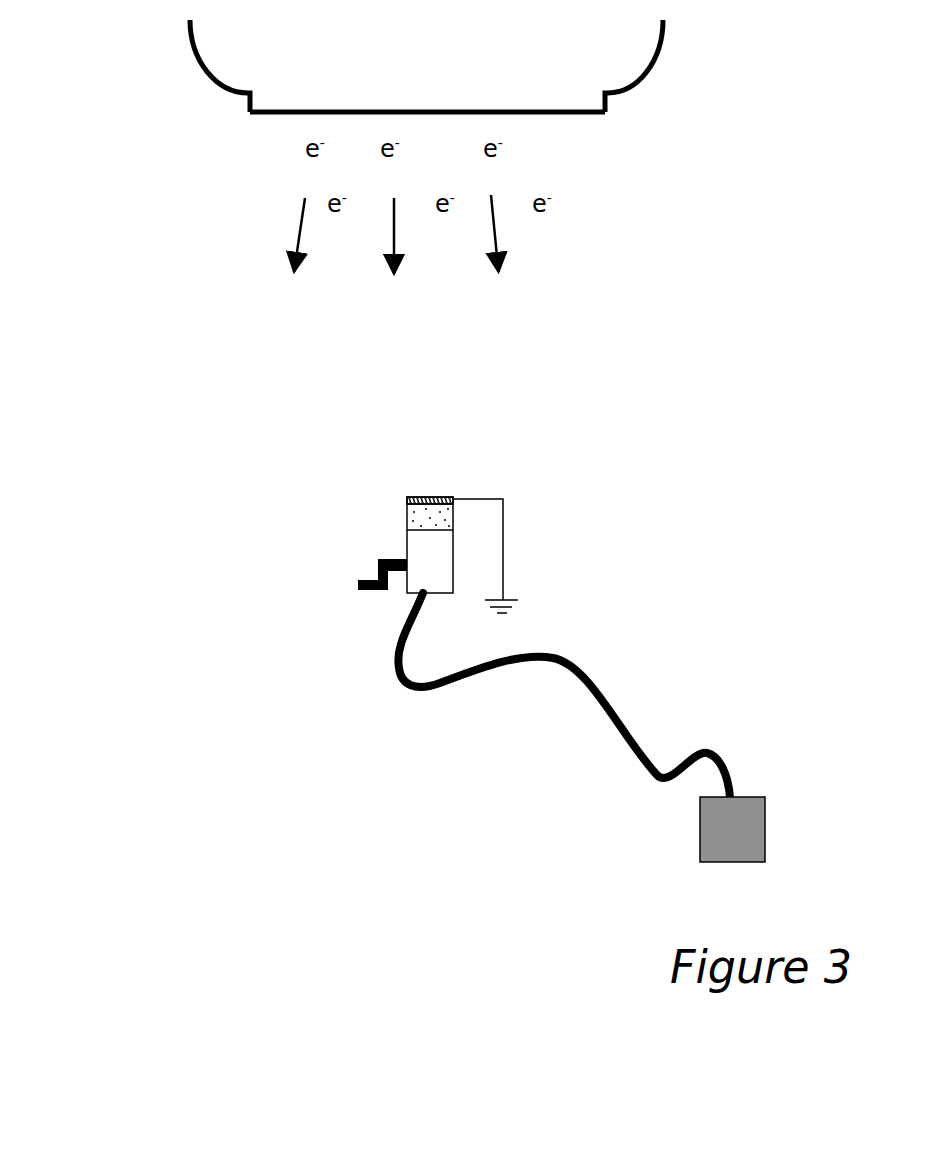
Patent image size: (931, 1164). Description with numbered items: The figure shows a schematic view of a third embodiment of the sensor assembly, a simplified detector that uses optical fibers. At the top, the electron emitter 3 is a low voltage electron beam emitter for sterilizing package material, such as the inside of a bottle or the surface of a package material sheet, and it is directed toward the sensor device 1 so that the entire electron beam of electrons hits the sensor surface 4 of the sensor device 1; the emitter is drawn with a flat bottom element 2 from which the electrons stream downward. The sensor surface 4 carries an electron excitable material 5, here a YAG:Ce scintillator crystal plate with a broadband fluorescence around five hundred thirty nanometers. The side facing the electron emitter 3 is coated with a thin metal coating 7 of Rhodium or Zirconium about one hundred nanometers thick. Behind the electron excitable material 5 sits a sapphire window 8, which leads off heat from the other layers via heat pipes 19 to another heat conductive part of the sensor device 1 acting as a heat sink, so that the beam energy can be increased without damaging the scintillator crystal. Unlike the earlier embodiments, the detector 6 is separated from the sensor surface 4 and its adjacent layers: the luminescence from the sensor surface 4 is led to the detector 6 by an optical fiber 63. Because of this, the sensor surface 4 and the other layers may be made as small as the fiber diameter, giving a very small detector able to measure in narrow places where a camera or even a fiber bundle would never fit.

The sensor device 1 is at (538, 486).
The sample plate 2 is at (578, 115).
The electron emitter 3 is at (170, 74).
The sensor surface 4 is at (419, 507).
The electron excitable material 5 is at (430, 497).
The detector 6 is at (718, 832).
The metal coating 7 is at (442, 497).
The sapphire window 8 is at (423, 553).
The heat pipes 19 is at (367, 588).
The optical fiber 63 is at (490, 675).